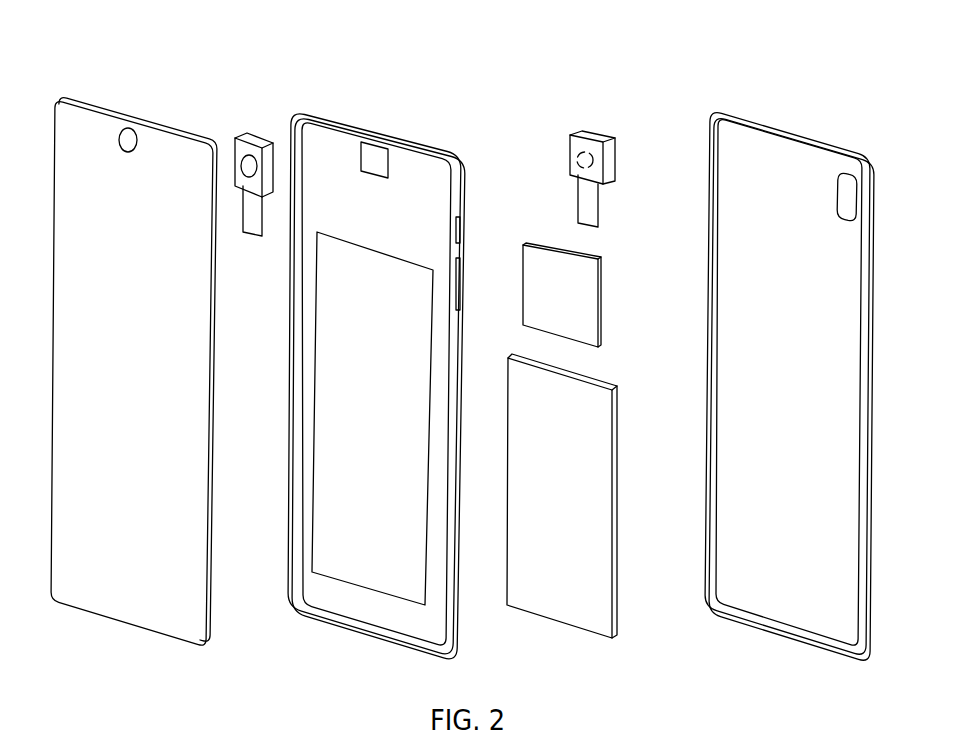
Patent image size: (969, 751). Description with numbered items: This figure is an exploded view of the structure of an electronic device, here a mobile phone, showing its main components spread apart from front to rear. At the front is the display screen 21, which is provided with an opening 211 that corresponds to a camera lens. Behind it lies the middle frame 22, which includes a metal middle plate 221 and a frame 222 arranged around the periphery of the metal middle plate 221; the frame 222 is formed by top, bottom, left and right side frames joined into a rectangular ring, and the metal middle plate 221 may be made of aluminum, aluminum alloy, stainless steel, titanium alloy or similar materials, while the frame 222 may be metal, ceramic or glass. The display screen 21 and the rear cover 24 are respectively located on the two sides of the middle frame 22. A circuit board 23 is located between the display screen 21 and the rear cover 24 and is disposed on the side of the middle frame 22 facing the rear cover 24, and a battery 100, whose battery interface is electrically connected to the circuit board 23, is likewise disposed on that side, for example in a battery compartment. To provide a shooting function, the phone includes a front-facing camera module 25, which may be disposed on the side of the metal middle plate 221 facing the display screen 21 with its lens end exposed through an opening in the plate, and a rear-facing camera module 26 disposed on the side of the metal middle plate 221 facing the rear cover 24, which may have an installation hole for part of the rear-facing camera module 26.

The display screen 21 is at (103, 104).
The opening 211 is at (136, 130).
The middle frame 22 is at (386, 100).
The metal middle plate 221 is at (408, 137).
The frame 222 is at (427, 197).
The circuit board 23 is at (588, 325).
The rear cover 24 is at (802, 175).
The front-facing camera module 25 is at (252, 137).
The rear-facing camera module 26 is at (590, 135).
The battery 100 is at (563, 603).